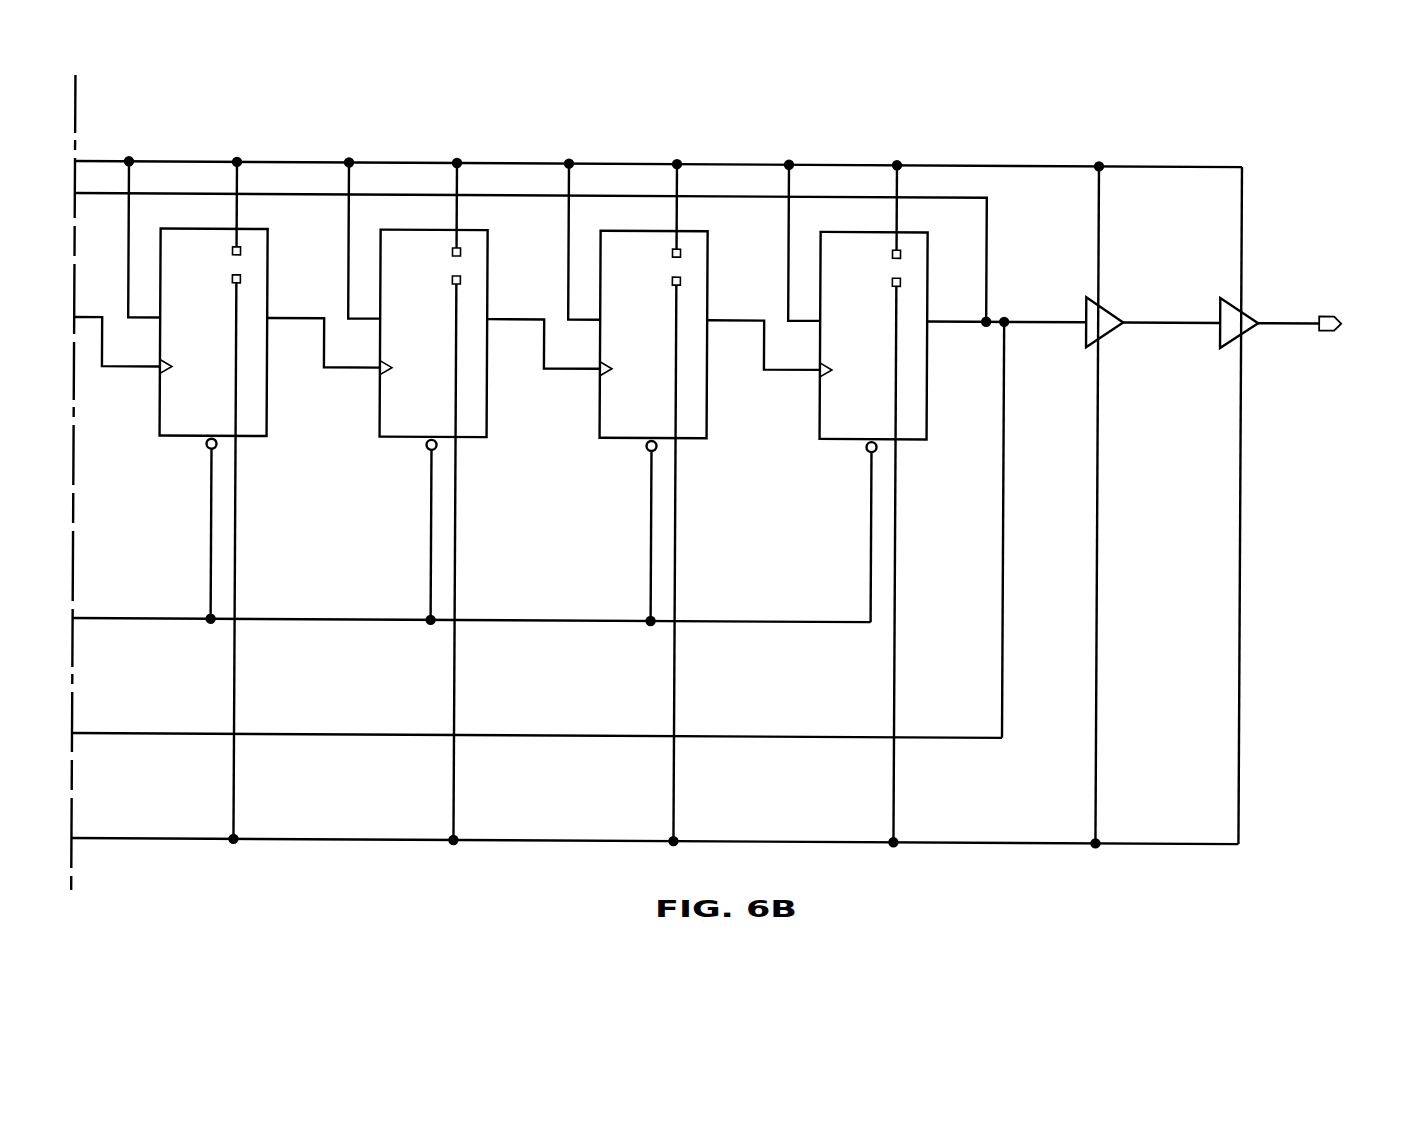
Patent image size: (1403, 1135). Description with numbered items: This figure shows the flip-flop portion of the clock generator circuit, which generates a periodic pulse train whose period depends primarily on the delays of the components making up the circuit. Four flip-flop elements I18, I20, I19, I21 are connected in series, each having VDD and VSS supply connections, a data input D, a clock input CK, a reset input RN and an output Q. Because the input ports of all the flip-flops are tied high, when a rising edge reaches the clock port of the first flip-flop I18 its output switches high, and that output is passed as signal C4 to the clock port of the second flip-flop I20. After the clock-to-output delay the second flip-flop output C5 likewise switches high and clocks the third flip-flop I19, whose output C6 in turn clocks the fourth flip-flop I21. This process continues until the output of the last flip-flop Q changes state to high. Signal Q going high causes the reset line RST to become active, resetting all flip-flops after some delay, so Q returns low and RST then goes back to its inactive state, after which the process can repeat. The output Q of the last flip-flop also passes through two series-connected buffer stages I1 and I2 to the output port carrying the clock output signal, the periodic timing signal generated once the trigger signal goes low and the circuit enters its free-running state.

The first D flip-flop I18 is at (219, 500).
The second D flip-flop I20 is at (440, 501).
The third D flip-flop I19 is at (660, 503).
The fourth D flip-flop I21 is at (880, 504).
The clock signal from I18 to I20 C4 is at (313, 317).
The clock signal from I20 to I19 C5 is at (535, 317).
The clock signal from I19 to I21 C6 is at (762, 317).
The output of the last flip-flop Q is at (987, 193).
The reset signal RST is at (348, 618).
The first inverter/buffer I1 is at (1153, 304).
The second inverter/buffer I2 is at (1269, 305).